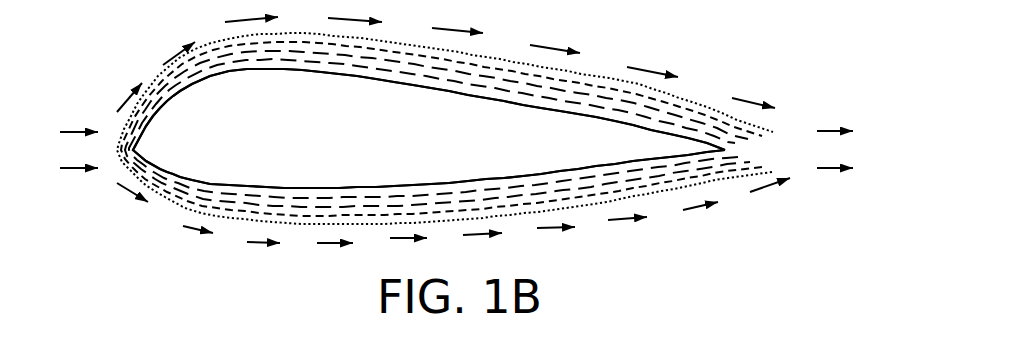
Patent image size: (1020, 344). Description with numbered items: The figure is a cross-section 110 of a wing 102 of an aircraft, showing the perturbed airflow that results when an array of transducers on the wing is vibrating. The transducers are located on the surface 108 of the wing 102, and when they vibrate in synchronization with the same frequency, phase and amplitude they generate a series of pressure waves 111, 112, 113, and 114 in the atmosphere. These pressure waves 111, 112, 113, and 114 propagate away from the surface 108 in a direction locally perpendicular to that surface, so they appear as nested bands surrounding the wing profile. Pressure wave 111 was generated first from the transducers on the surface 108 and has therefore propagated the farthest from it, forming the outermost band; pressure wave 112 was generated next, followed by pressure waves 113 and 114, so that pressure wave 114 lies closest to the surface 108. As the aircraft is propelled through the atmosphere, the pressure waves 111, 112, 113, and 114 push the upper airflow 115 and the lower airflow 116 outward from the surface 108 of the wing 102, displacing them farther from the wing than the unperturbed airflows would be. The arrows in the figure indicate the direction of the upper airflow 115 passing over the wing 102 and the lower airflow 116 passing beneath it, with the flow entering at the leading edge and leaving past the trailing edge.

The wing 102 is at (318, 141).
The surface 108 is at (337, 74).
The cross-section 110 is at (62, 57).
The pressure wave 111 is at (215, 48).
The pressure wave 112 is at (315, 45).
The pressure wave 113 is at (413, 64).
The pressure wave 114 is at (517, 88).
The upper airflow 115 is at (163, 65).
The lower airflow 116 is at (185, 226).